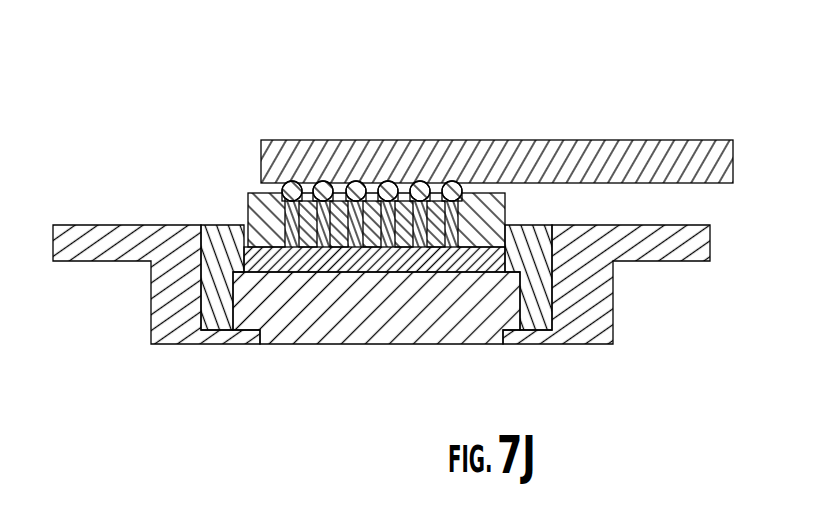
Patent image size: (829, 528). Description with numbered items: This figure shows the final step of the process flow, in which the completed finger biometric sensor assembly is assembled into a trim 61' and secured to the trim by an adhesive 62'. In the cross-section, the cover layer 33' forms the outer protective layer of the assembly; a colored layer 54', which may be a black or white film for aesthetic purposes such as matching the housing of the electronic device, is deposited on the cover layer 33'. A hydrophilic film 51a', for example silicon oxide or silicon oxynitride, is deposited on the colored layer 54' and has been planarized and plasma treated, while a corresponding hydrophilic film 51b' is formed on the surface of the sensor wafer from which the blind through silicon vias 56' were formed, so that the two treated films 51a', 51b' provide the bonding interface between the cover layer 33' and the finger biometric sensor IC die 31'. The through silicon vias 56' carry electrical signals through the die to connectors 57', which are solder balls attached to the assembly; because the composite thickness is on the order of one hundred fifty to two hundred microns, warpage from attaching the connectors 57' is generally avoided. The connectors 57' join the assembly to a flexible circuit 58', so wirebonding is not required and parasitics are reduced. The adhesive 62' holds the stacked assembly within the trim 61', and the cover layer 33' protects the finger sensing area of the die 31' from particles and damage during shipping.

The finger biometric sensor IC die 31' is at (497, 146).
The cover layer 33' is at (370, 336).
The hydrophilic film 51a' is at (633, 286).
The hydrophilic film 51b' is at (606, 284).
The colored layer 54' is at (397, 323).
The through silicon vias 56' is at (359, 197).
The connectors 57' is at (366, 139).
The flexible circuit 58' is at (763, 198).
The trim 61' is at (156, 304).
The adhesive 62' is at (370, 212).